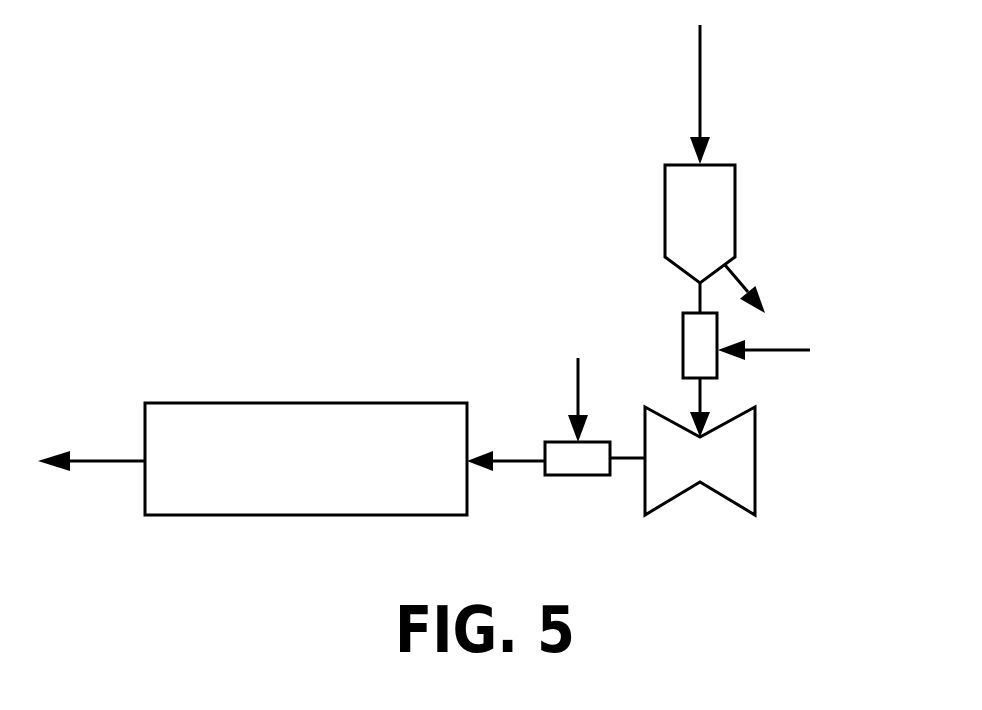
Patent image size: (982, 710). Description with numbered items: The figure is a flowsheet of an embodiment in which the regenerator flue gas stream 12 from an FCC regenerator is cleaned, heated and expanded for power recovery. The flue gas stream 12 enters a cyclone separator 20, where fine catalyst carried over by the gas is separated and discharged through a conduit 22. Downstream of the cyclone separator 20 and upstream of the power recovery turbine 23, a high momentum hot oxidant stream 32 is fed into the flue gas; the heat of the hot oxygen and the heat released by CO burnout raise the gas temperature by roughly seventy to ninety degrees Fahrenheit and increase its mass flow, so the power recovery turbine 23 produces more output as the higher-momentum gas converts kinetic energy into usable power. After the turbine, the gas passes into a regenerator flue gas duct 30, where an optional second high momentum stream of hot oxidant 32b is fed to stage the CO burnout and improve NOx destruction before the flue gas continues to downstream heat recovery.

The regenerator flue gas stream 12 is at (698, 89).
The cyclone separator 20 is at (665, 232).
The conduit 22 is at (765, 295).
The high momentum hot oxidant stream 32 is at (766, 345).
The power recovery turbine 23 is at (728, 497).
The second high momentum stream of hot oxidant 32b is at (556, 395).
The regenerator flue gas duct 30 is at (333, 478).